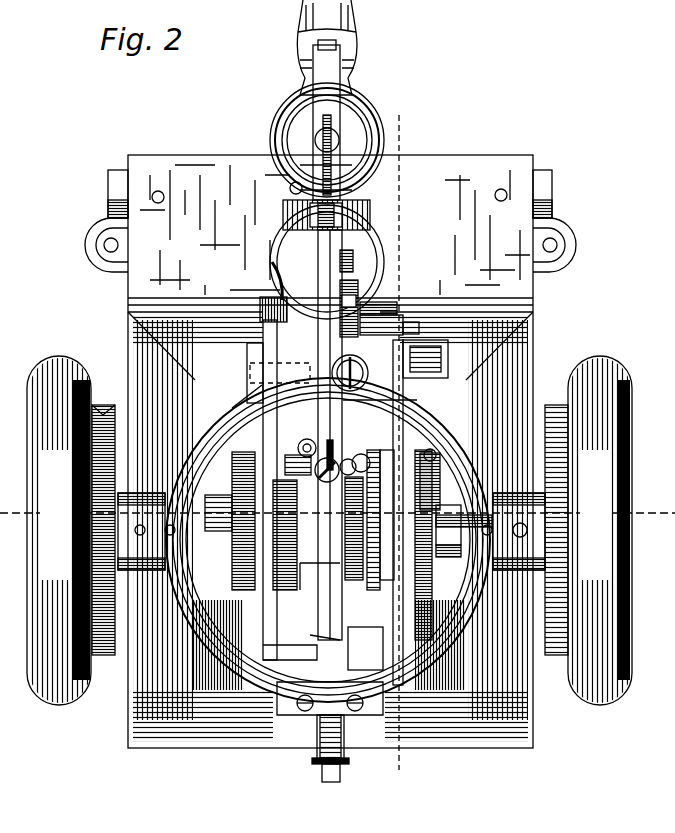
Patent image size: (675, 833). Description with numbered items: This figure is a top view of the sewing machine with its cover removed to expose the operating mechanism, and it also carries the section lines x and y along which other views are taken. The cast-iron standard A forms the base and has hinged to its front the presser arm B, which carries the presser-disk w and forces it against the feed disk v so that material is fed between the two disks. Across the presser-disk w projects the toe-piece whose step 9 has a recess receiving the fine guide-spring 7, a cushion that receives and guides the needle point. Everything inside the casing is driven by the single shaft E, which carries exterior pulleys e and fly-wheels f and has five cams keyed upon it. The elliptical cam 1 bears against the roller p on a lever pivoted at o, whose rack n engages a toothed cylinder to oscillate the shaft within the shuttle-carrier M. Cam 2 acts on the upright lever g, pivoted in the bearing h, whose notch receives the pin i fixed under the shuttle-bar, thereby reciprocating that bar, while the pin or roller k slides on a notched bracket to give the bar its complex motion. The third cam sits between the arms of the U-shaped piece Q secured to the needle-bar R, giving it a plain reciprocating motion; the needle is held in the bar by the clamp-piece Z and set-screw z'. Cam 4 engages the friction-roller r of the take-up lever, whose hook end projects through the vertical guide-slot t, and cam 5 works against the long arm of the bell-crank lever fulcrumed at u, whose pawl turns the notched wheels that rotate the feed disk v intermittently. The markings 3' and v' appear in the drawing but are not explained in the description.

The cast-iron box or standard A is at (330, 451).
The presser foot or arm B is at (356, 42).
The presser-disk w is at (327, 140).
The guide-spring 7 is at (328, 122).
The section line x is at (406, 446).
The shuttle-carrier M is at (288, 200).
The feed cup or disk v is at (339, 320).
The step 9 is at (327, 435).
The set-screw z' is at (354, 259).
The pin or roller k is at (351, 312).
The fulcrum u is at (397, 308).
The block 3' is at (417, 330).
The box v' is at (428, 354).
The pivot o is at (278, 350).
The clamp-piece Z is at (323, 517).
The disc z is at (358, 373).
The elliptical cam 1 is at (328, 540).
The section line y is at (337, 531).
The fly-wheel f is at (329, 530).
The pulley e is at (330, 518).
The roller p is at (230, 521).
The cam 2 is at (292, 522).
The bearing h is at (300, 447).
The pin i is at (333, 447).
The vertical guide-slot t is at (359, 445).
The upright lever g is at (362, 520).
The U-shaped piece Q is at (331, 560).
The cam 4 is at (412, 512).
The friction-roller r is at (456, 495).
The cam 5 is at (448, 558).
The shaft E is at (319, 576).
The rack n is at (318, 632).
The needle-bar R is at (335, 754).